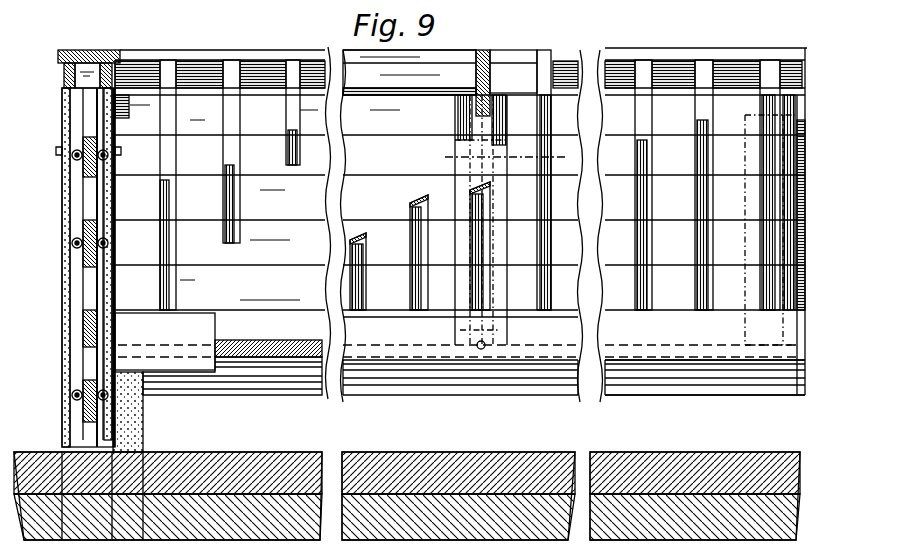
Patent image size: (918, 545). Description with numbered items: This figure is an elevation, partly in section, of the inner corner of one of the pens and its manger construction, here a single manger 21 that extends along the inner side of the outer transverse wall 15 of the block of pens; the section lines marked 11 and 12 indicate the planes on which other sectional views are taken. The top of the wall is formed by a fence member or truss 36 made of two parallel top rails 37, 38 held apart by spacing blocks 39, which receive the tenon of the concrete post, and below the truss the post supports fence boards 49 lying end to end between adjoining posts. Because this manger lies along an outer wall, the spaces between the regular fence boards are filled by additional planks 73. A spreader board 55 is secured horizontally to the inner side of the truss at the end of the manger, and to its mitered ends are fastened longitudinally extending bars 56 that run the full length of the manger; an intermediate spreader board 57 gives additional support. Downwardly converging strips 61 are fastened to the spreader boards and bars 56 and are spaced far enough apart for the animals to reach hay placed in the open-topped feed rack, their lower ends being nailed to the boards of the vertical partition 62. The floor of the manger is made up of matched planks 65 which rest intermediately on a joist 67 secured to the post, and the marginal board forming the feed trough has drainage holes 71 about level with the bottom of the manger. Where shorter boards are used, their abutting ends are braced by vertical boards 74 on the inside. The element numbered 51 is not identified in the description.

The section line 11- 11 is at (58, 150).
The section line 12- 12 is at (438, 145).
The outer transverse wall 15 is at (475, 52).
The manger 21 is at (640, 394).
The fence member or truss 36 is at (58, 57).
The top rail 37 is at (66, 74).
The top rail 38 is at (103, 89).
The spacing block 39 is at (87, 68).
The fence board 49 is at (85, 163).
The post 51 is at (55, 208).
The spreader board 55 is at (128, 112).
The longitudinally extending bar 56 is at (331, 50).
The intermediate spreader board 57 is at (493, 48).
The downwardly converging strip 61 is at (288, 146).
The central vertical partition 62 is at (308, 360).
The matched plank 65 is at (242, 352).
The joist 67 is at (273, 396).
The drainage hole 71 is at (481, 349).
The additional plank 73 is at (415, 98).
The vertical board 74 is at (502, 219).